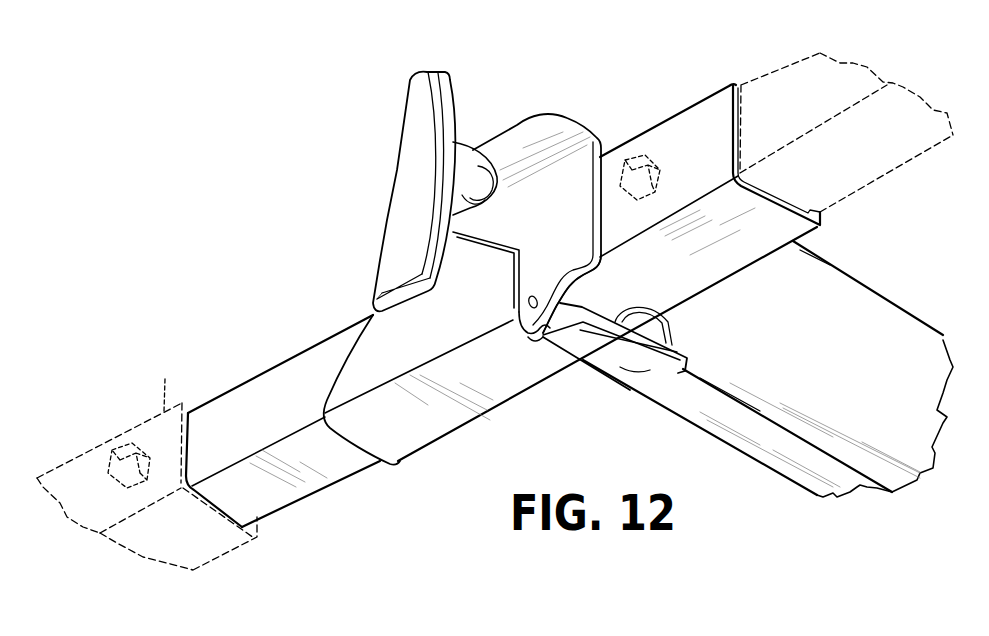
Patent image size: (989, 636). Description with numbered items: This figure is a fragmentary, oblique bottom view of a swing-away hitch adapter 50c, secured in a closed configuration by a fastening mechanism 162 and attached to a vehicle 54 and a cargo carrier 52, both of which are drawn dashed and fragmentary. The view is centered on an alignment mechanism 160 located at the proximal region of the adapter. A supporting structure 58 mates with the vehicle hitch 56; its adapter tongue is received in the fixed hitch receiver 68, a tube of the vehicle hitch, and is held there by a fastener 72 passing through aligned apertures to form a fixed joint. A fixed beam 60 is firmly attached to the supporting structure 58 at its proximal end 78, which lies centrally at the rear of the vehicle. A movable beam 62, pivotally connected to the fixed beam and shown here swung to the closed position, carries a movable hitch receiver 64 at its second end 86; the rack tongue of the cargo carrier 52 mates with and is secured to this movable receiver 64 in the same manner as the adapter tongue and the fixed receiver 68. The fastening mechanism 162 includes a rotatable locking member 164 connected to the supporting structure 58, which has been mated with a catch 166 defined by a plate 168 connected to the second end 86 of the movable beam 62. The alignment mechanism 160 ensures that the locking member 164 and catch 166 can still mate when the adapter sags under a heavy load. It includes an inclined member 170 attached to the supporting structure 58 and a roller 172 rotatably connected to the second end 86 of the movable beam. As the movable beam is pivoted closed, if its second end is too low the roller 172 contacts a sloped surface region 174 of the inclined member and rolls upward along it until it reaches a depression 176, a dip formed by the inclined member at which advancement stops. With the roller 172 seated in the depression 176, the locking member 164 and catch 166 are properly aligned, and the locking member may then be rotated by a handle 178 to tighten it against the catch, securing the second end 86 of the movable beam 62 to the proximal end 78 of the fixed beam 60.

The hitch adapter 50c is at (342, 97).
The cargo carrier 52 is at (872, 182).
The vehicle 54 is at (91, 450).
The vehicle hitch 56 is at (225, 560).
The supporting structure 58 is at (283, 372).
The fixed beam 60 is at (770, 477).
The movable beam 62 is at (880, 293).
The movable hitch receiver 64 is at (698, 100).
The fixed hitch receiver 68 is at (165, 381).
The fastener 72 is at (633, 147).
The proximal end 78 is at (652, 393).
The second end 86 is at (817, 266).
The alignment mechanism 160 is at (607, 348).
The fastening mechanism 162 is at (493, 158).
The rotatable locking member 164 is at (398, 170).
The catch 166 is at (495, 190).
The plate 168 is at (543, 115).
The inclined member 170 is at (578, 367).
The roller 172 is at (577, 305).
The sloped surface region 174 is at (676, 328).
The depression 176 is at (544, 340).
The handle 178 is at (375, 270).